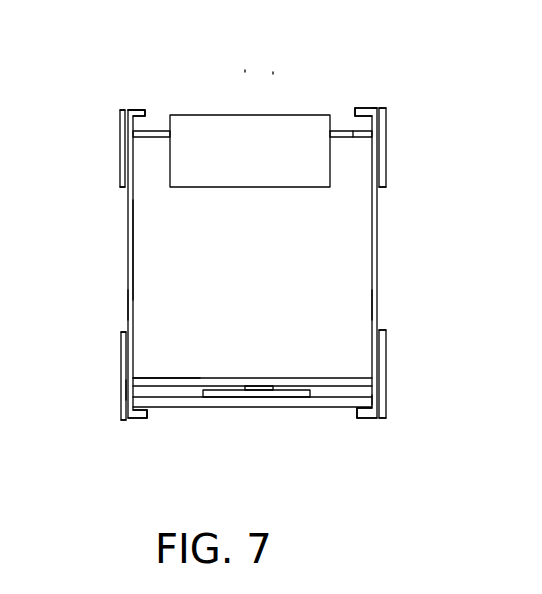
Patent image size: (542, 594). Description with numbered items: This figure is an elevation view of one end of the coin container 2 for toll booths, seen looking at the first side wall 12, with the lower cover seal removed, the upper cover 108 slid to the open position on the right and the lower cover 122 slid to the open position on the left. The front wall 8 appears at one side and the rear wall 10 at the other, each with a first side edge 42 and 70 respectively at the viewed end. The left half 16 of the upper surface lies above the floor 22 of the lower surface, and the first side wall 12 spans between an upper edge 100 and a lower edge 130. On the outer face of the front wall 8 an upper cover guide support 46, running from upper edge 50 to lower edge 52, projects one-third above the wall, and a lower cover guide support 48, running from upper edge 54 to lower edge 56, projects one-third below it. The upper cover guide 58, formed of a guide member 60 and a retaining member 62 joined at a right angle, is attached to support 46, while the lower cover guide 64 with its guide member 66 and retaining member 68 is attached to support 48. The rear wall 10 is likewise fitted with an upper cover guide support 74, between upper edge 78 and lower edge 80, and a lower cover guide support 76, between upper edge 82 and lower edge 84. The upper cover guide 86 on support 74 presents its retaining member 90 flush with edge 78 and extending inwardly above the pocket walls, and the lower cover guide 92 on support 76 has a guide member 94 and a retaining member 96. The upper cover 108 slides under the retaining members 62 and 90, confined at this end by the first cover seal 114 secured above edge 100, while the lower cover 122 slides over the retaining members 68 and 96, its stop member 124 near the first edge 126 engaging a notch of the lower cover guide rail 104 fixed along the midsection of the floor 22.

The container 2 is at (245, 70).
The front wall 8 is at (378, 283).
The rear wall 10 is at (128, 232).
The first side wall 12 is at (135, 275).
The left half 16 is at (273, 72).
The floor 22 is at (183, 383).
The first side edge 42 is at (373, 308).
The upper cover guide support 46 is at (386, 128).
The lower cover guide support 48 is at (386, 378).
The upper edge 50 is at (378, 107).
The lower edge 52 is at (386, 187).
The upper edge 54 is at (385, 330).
The lower edge 56 is at (388, 420).
The upper cover guide 58 is at (375, 98).
The guide member 60 is at (355, 113).
The retaining member 62 is at (361, 108).
The lower cover guide 64 is at (375, 422).
The guide member 66 is at (377, 400).
The retaining member 68 is at (362, 418).
The first side edge 70 is at (125, 305).
The upper cover guide support 74 is at (120, 145).
The lower cover guide support 76 is at (126, 370).
The upper edge 78 is at (120, 110).
The lower edge 80 is at (122, 188).
The upper edge 82 is at (121, 330).
The lower edge 84 is at (125, 420).
The upper cover guide 86 is at (147, 118).
The retaining member 90 is at (130, 108).
The lower cover guide 92 is at (148, 423).
The guide member 94 is at (128, 390).
The retaining member 96 is at (140, 418).
The upper edge 100 is at (353, 138).
The lower cover guide rail 104 is at (259, 388).
The upper cover 108 is at (148, 138).
The first cover seal 114 is at (288, 117).
The lower cover 122 is at (290, 405).
The stop member 124 is at (295, 395).
The first edge 126 is at (322, 405).
The lower edge 130 is at (150, 378).